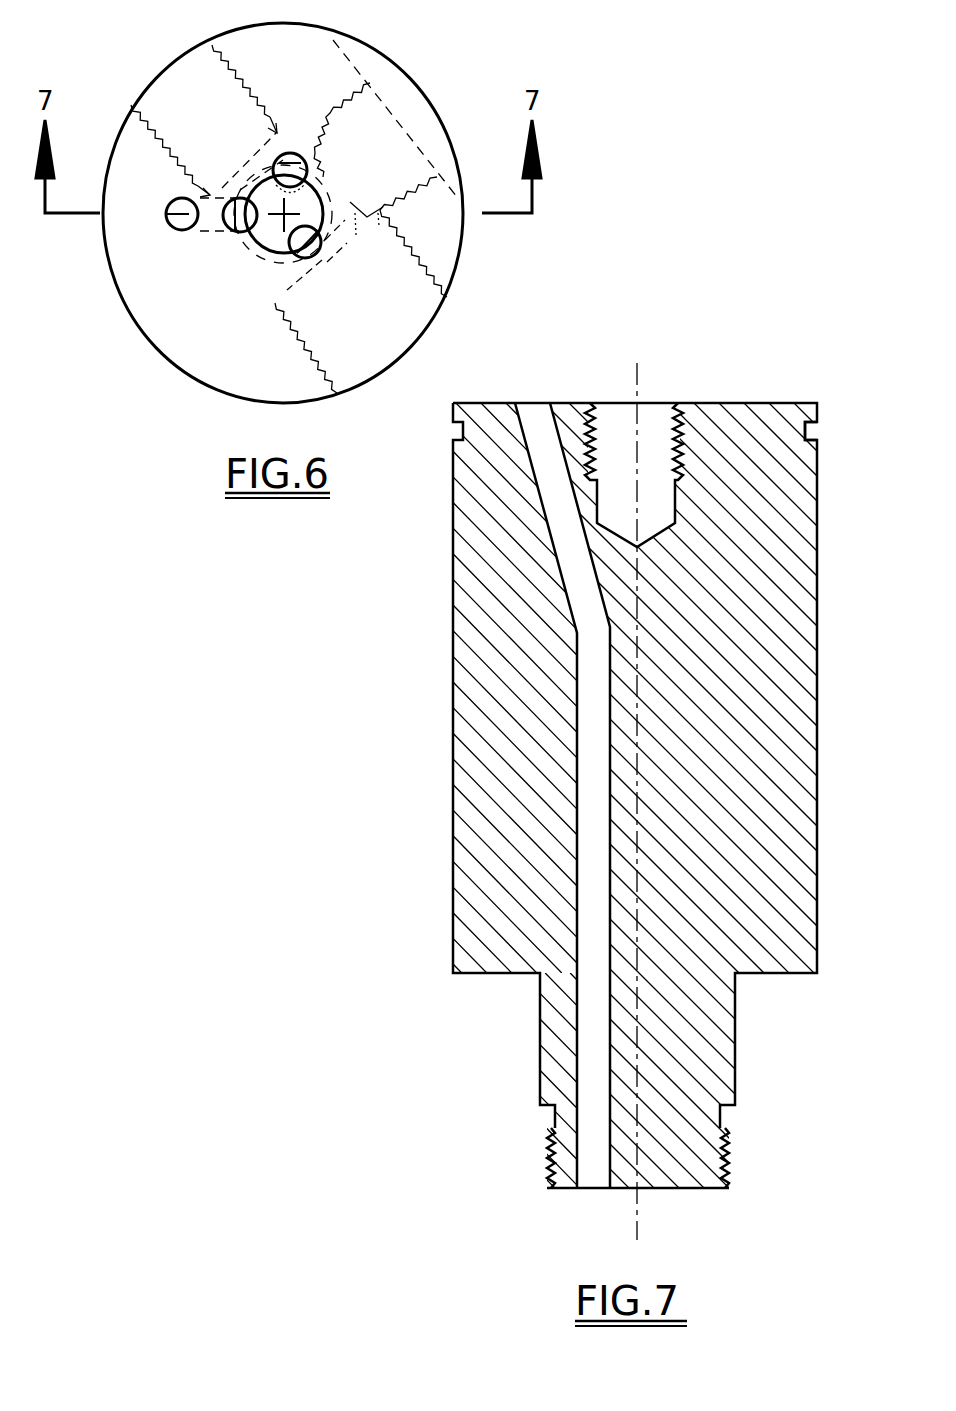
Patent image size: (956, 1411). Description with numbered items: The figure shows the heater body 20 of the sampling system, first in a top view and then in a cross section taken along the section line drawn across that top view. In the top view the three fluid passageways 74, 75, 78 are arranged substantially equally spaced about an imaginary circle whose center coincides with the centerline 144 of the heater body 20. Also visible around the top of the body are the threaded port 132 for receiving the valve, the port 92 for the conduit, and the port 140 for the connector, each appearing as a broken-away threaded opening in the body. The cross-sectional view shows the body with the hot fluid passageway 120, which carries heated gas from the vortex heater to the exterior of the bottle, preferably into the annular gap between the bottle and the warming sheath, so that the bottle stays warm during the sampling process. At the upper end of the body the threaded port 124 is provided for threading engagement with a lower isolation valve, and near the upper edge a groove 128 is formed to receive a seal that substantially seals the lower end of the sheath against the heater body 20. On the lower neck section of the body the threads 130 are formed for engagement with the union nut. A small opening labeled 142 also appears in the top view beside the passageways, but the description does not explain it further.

In FIG. 7, the heater body 20 is at (480, 676).
In FIG. 6, the fluid passageway 74 is at (298, 153).
In FIG. 6, the fluid passageway 75 is at (318, 267).
In FIG. 6, the fluid passageway 78 is at (232, 220).
In FIG. 6, the port 92 is at (298, 350).
In FIG. 7, the hot fluid passageway 120 is at (590, 805).
In FIG. 7, the threaded port 124 is at (600, 437).
In FIG. 7, the groove 128 is at (812, 432).
In FIG. 7, the threads 130 is at (730, 1142).
In FIG. 6, the threaded port 132 is at (357, 98).
In FIG. 6, the port 140 is at (159, 124).
In FIG. 6, the orifice 142 is at (165, 214).
In FIG. 6, the centerline 144 is at (261, 247).
In FIG. 7, the centerline 144 is at (637, 735).